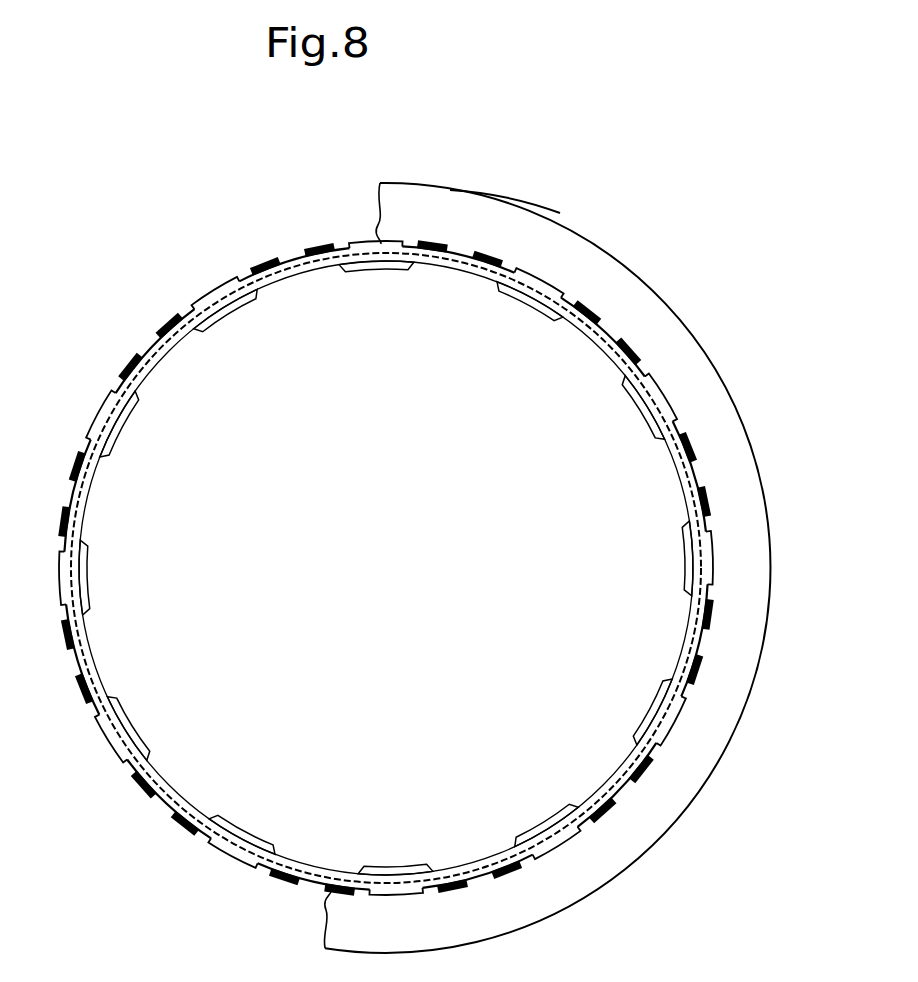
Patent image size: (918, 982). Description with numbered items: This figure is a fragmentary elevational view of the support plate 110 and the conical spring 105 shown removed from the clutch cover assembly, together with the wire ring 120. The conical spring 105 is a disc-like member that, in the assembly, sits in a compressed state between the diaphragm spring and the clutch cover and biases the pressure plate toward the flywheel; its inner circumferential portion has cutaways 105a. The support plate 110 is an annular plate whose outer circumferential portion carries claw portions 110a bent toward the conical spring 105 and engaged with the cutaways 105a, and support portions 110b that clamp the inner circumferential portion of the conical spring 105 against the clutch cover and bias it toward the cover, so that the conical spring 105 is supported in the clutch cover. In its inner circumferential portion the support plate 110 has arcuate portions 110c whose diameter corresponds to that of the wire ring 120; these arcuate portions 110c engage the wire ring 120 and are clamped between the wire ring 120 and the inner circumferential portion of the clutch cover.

The conical spring 105 is at (427, 195).
The cutaways 105a is at (500, 250).
The support plate 110 is at (97, 378).
The claw portions 110a is at (316, 240).
The support portions 110b is at (222, 278).
The arcuate portions 110c is at (165, 355).
The wire ring 120 is at (124, 428).